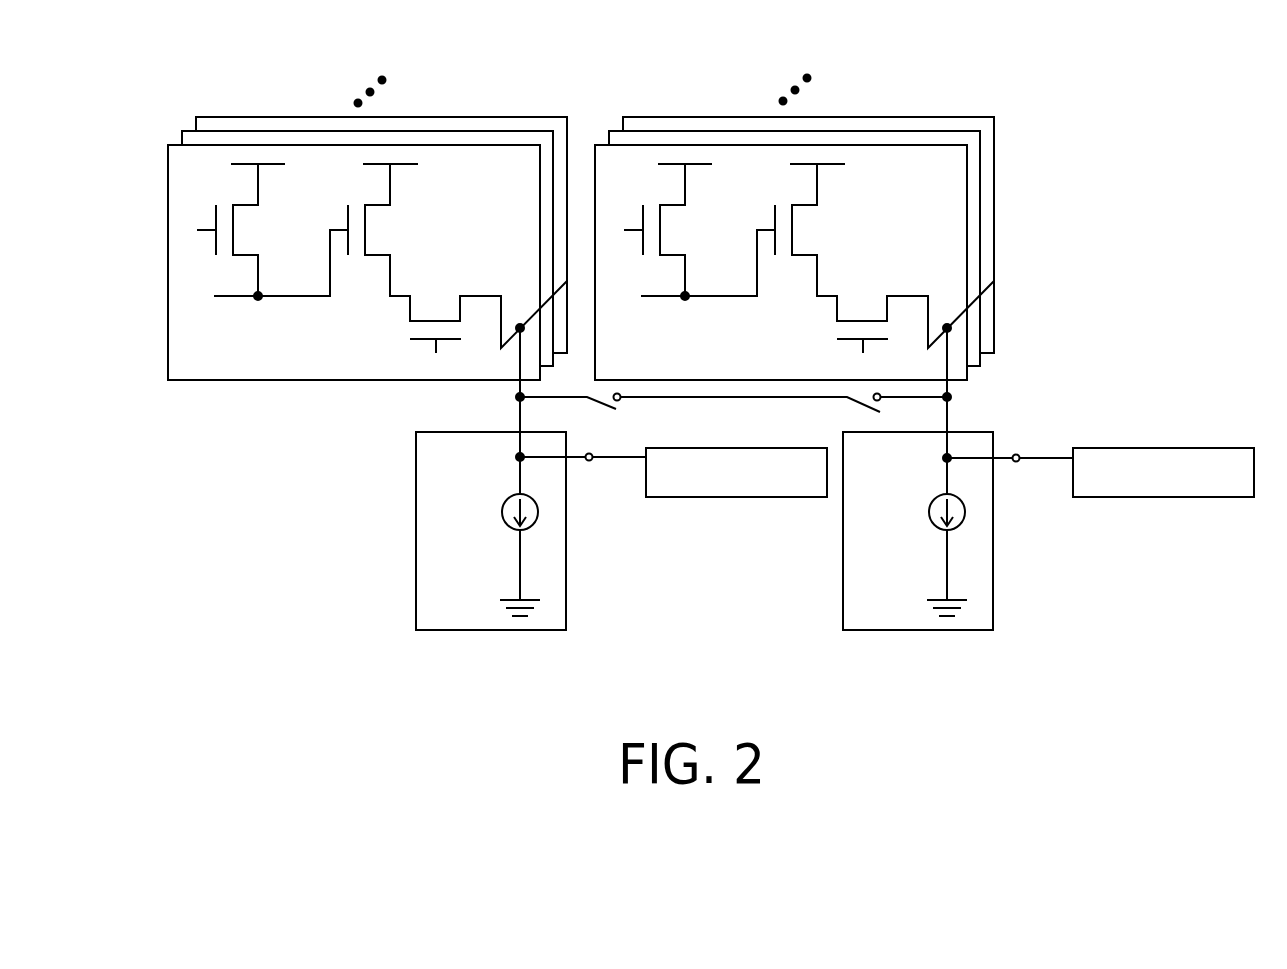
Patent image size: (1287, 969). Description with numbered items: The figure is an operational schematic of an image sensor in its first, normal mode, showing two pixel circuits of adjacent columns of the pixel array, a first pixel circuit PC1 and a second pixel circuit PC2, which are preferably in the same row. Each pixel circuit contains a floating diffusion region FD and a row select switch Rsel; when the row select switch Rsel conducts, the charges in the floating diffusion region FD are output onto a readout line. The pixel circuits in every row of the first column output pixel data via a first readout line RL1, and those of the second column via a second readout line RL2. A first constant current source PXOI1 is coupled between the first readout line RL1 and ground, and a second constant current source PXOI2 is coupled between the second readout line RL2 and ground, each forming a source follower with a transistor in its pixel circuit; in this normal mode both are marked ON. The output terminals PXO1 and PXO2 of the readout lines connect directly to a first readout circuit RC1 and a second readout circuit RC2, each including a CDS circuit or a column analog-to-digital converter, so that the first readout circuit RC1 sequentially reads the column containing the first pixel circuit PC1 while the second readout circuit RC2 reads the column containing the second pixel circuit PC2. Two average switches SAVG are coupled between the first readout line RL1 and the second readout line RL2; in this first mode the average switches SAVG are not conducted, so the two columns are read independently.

The first pixel circuit PC1 is at (176, 145).
The second pixel circuit PC2 is at (781, 207).
The floating diffusion region FD is at (469, 311).
The row select switch Rsel is at (649, 360).
The first readout line RL1 is at (518, 412).
The second readout line RL2 is at (985, 380).
The average switch SAVG is at (733, 411).
The first constant current source PXOI1 is at (491, 531).
The second constant current source PXOI2 is at (918, 531).
The output terminal of the first readout line PXO1 is at (581, 475).
The output terminal of the second readout line PXO2 is at (1008, 476).
The first readout circuit RC1 is at (712, 497).
The second readout circuit RC2 is at (1163, 501).
The current source on-state label ON is at (658, 610).